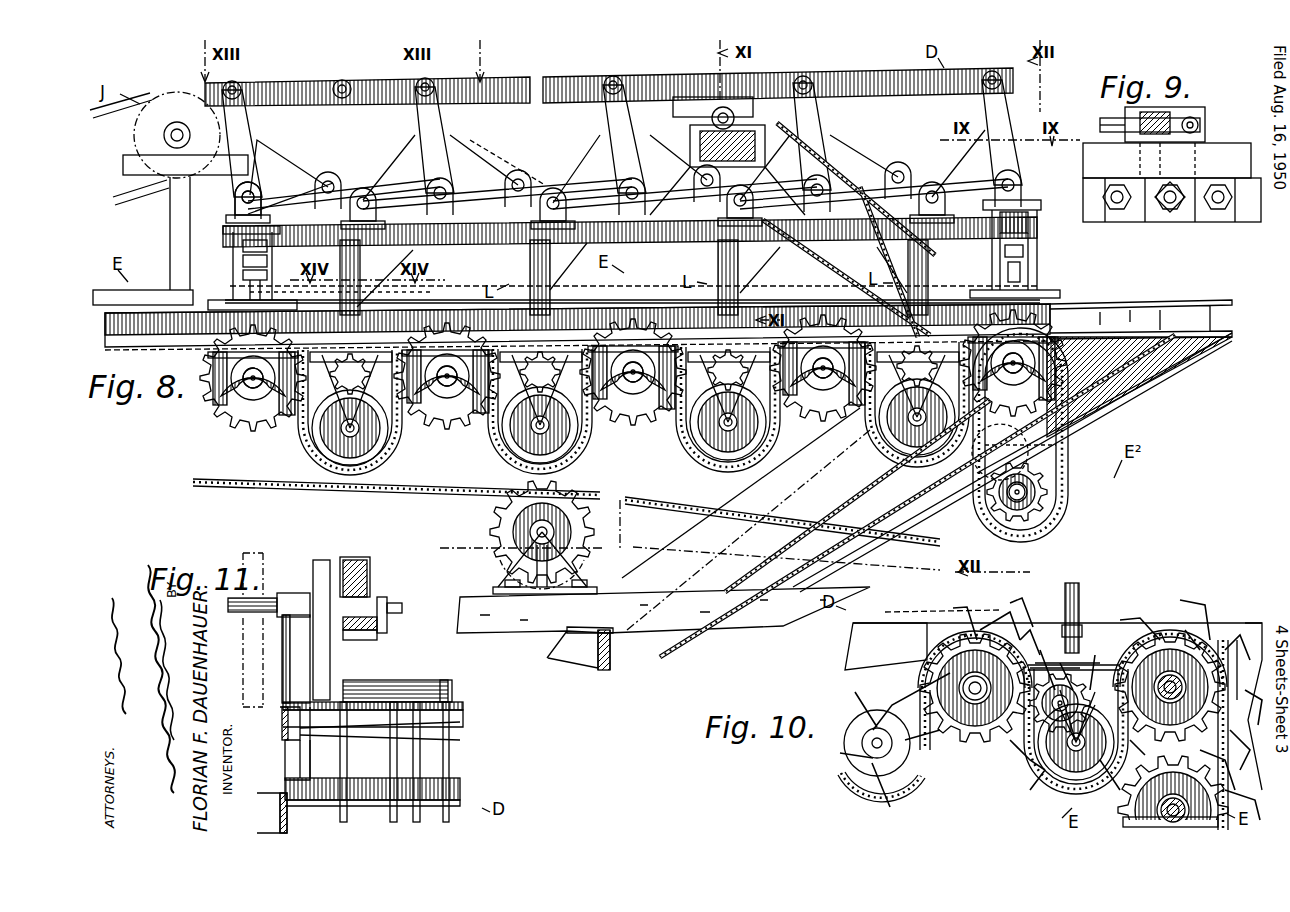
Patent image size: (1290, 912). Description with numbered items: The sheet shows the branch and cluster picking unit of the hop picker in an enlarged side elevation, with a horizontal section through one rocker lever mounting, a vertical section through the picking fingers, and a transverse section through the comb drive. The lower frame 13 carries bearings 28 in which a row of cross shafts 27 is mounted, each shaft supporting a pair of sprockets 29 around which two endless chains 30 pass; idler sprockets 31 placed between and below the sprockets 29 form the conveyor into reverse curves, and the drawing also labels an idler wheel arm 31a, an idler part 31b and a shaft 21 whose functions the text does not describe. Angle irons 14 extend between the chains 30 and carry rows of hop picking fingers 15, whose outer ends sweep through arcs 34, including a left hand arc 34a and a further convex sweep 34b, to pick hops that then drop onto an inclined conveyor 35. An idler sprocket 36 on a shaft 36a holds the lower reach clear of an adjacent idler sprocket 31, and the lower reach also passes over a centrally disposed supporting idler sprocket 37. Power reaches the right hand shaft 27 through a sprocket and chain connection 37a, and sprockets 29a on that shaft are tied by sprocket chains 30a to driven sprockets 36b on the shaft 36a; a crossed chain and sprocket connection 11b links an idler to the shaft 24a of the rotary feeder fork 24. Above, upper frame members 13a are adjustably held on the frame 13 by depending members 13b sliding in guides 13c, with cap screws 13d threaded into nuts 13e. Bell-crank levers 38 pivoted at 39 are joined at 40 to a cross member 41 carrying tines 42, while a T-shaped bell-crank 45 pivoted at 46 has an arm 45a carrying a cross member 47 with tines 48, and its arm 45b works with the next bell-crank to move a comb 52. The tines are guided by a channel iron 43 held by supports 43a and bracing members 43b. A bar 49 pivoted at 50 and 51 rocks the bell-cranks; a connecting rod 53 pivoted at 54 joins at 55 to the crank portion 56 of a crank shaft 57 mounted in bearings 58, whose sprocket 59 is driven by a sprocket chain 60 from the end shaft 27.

In FIG. 8, the crossed chain and sprocket connection 11b is at (135, 205).
In FIG. 8, the frame 13 is at (118, 348).
In FIG. 9, the frame 13 is at (1080, 168).
In FIG. 11, the frame 13 is at (268, 810).
In FIG. 10, the frame 13 is at (853, 652).
In FIG. 8, the upper frame members 13a is at (233, 228).
In FIG. 9, the upper frame members 13a is at (1225, 148).
In FIG. 11, the upper frame members 13a is at (283, 720).
In FIG. 8, the depending members 13b is at (243, 246).
In FIG. 9, the depending members 13b is at (1168, 214).
In FIG. 8, the guides 13c is at (266, 260).
In FIG. 9, the guides 13c is at (1119, 214).
In FIG. 8, the cap screws 13d is at (243, 271).
In FIG. 9, the cap screws 13d is at (1175, 208).
In FIG. 8, the nuts 13e is at (210, 302).
In FIG. 9, the nuts 13e is at (1217, 210).
In FIG. 10, the angle irons 14 is at (1051, 702).
In FIG. 10, the hop picking fingers 15 is at (1109, 695).
In FIG. 8, the shaft 21 is at (1043, 380).
In FIG. 8, the pulley 24 is at (178, 94).
In FIG. 8, the shaft 24a is at (164, 136).
In FIG. 8, the cross shafts 27 is at (250, 385).
In FIG. 10, the cross shafts 27 is at (980, 695).
In FIG. 8, the bearings 28 is at (268, 392).
In FIG. 10, the bearings 28 is at (968, 728).
In FIG. 8, the sprockets 29 is at (220, 396).
In FIG. 10, the sprockets 29 is at (976, 722).
In FIG. 8, the sprockets 29a is at (1105, 402).
In FIG. 8, the endless chains 30 is at (506, 494).
In FIG. 10, the endless chains 30 is at (1224, 680).
In FIG. 8, the sprocket chains 30a is at (1025, 492).
In FIG. 8, the idler sprockets 31 is at (387, 452).
In FIG. 10, the idler sprockets 31 is at (1052, 780).
In FIG. 8, the wheel arm 31a is at (352, 435).
In FIG. 8, the idler sprocket 31b is at (1057, 446).
In FIG. 8, the arcs 34 is at (670, 294).
In FIG. 10, the arcs 34 is at (948, 598).
In FIG. 8, the left hand arc 34a is at (840, 292).
In FIG. 10, the left hand arc 34a is at (918, 606).
In FIG. 8, the convex arcuate sweep 34b is at (1080, 298).
In FIG. 10, the convex arcuate sweep 34b is at (1155, 584).
In FIG. 8, the inclined conveyor 35 is at (740, 628).
In FIG. 8, the idler sprocket 36 is at (1055, 512).
In FIG. 8, the shaft 36a is at (1035, 495).
In FIG. 8, the driven sprockets 36b is at (980, 475).
In FIG. 8, the supporting idler sprocket 37 is at (502, 545).
In FIG. 8, the sprocket and chain connection 37a is at (815, 506).
In FIG. 8, the bell-crank lever 38 is at (240, 115).
In FIG. 9, the bell-crank lever 38 is at (1105, 118).
In FIG. 8, the pivot 39 is at (236, 199).
In FIG. 9, the pivot 39 is at (1198, 110).
In FIG. 8, the pivot 40 is at (326, 179).
In FIG. 8, the cross member 41 is at (332, 204).
In FIG. 8, the tines 42 is at (332, 190).
In FIG. 11, the tines 42 is at (344, 744).
In FIG. 10, the tines 42 is at (1079, 641).
In FIG. 8, the channel iron 43 is at (442, 298).
In FIG. 11, the channel iron 43 is at (460, 786).
In FIG. 10, the channel iron 43 is at (1064, 604).
In FIG. 8, the supports 43a is at (340, 265).
In FIG. 11, the supports 43a is at (285, 744).
In FIG. 10, the supports 43a is at (1077, 580).
In FIG. 8, the bracing members 43b is at (410, 262).
In FIG. 10, the bracing members 43b is at (1084, 596).
In FIG. 8, the T-shaped bell-crank 45 is at (440, 124).
In FIG. 11, the T-shaped bell-crank 45 is at (325, 560).
In FIG. 8, the arm 45a is at (405, 184).
In FIG. 11, the arm 45a is at (365, 680).
In FIG. 8, the arm 45b is at (510, 142).
In FIG. 8, the pivot point 46 is at (478, 157).
In FIG. 8, the cross member 47 is at (444, 242).
In FIG. 11, the cross member 47 is at (460, 708).
In FIG. 8, the tines 48 is at (344, 342).
In FIG. 11, the tines 48 is at (460, 740).
In FIG. 8, the bar 49 is at (292, 82).
In FIG. 8, the pivot 50 is at (250, 96).
In FIG. 8, the pivot 51 is at (422, 98).
In FIG. 11, the pivot 51 is at (370, 559).
In FIG. 8, the comb 52 is at (534, 205).
In FIG. 11, the comb 52 is at (445, 680).
In FIG. 8, the connecting rod 53 is at (344, 98).
In FIG. 11, the connecting rod 53 is at (372, 584).
In FIG. 8, the pivot 54 is at (344, 80).
In FIG. 8, the connection 55 is at (720, 98).
In FIG. 11, the connection 55 is at (385, 610).
In FIG. 11, the crank portion 56 is at (358, 617).
In FIG. 8, the crank shaft 57 is at (715, 114).
In FIG. 11, the crank shaft 57 is at (400, 604).
In FIG. 8, the bearings 58 is at (988, 76).
In FIG. 11, the bearings 58 is at (290, 593).
In FIG. 11, the sprocket 59 is at (240, 600).
In FIG. 8, the sprocket chain 60 is at (818, 158).
In FIG. 11, the sprocket chain 60 is at (252, 664).